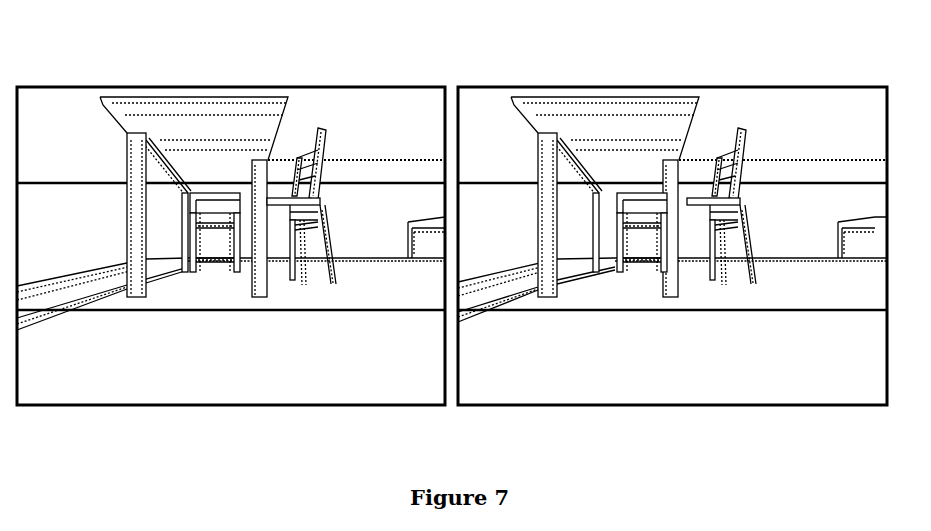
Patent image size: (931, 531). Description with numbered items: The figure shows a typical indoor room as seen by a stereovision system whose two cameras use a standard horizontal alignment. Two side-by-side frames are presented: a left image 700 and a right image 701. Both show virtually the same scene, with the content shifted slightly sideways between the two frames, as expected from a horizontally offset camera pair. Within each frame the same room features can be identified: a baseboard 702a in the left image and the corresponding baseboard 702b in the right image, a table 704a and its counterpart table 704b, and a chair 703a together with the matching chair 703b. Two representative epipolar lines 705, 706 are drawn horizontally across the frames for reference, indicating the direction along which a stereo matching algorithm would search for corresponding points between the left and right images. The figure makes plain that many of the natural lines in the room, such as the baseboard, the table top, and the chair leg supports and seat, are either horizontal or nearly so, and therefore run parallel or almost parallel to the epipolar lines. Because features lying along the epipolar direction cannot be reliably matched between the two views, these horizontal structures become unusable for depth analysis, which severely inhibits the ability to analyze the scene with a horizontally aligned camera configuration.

The left image 700 is at (223, 63).
The right image 701 is at (633, 63).
The baseboard 702a is at (355, 265).
The baseboard 702b is at (787, 262).
The chair 703a is at (328, 122).
The chair 703b is at (748, 122).
The table 704a is at (133, 297).
The table 704b is at (545, 297).
The epipolar line 705 is at (820, 183).
The epipolar line 706 is at (723, 310).